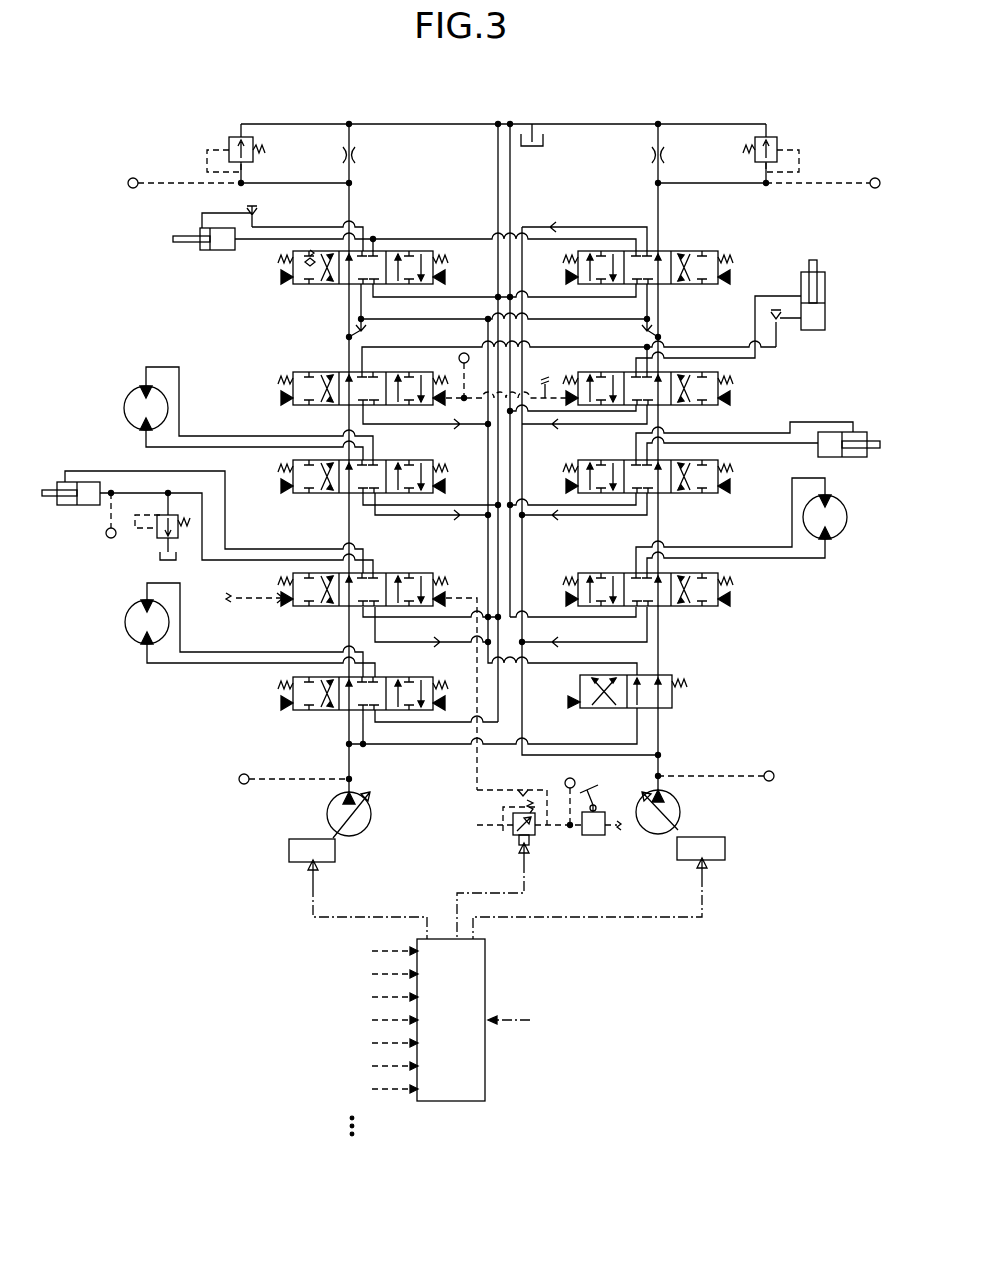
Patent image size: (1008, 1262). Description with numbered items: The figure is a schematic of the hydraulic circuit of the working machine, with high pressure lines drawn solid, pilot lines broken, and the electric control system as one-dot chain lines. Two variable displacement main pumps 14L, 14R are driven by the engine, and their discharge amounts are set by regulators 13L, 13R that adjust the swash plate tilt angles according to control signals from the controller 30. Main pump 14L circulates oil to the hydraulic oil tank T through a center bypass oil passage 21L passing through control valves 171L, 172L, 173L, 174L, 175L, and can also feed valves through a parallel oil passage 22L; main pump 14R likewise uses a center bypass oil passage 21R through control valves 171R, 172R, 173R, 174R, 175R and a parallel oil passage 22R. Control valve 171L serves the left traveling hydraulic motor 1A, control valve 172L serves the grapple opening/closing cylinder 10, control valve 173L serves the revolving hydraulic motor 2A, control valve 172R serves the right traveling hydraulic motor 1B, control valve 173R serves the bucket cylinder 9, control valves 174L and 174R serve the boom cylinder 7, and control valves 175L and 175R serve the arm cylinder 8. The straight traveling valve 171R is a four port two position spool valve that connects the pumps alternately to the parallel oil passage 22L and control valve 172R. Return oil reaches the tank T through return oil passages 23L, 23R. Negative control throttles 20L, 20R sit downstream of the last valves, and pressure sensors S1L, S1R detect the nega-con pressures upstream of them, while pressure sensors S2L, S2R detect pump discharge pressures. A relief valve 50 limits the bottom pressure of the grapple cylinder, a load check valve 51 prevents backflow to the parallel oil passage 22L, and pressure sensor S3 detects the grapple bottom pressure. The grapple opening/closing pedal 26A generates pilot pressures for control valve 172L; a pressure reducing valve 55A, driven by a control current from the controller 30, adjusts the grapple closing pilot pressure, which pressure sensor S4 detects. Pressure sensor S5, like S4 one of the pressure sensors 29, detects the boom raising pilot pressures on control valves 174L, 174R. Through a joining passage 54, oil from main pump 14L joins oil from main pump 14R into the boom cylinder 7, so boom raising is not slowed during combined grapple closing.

The pressure sensor S1L is at (133, 178).
The pressure sensor S1R is at (875, 178).
The negative control throttle 20L is at (343, 158).
The negative control throttle 20R is at (666, 157).
The hydraulic oil tank T is at (535, 147).
The return oil passage 23L is at (495, 200).
The return oil passage 23R is at (515, 200).
The arm cylinder 8 is at (186, 226).
The control valve 175L is at (283, 262).
The control valve 175R is at (722, 268).
The boom cylinder 7 is at (813, 260).
The control valve 174L is at (290, 378).
The control valve 174R is at (722, 385).
The joining passage 54 is at (418, 346).
The pressure sensor S5 is at (459, 360).
The revolving hydraulic motor 2A is at (125, 395).
The bucket cylinder 9 is at (872, 432).
The control valve 173L is at (283, 470).
The control valve 173R is at (722, 475).
The right traveling hydraulic motor 1B is at (840, 500).
The grapple opening/closing cylinder 10 is at (72, 506).
The pressure sensor S3 is at (107, 540).
The relief valve 50 is at (157, 535).
The parallel oil passage 22L is at (485, 535).
The parallel oil passage 22R is at (525, 535).
The control valve 172L is at (283, 580).
The control valve 172R is at (722, 586).
The grapple opening/closing pedal 26A is at (592, 872).
The left traveling hydraulic motor 1A is at (125, 605).
The load check valve 51 is at (441, 646).
The control valve 171L is at (283, 687).
The straight traveling valve 171R is at (657, 674).
The center bypass oil passage 21L is at (345, 770).
The center bypass oil passage 21R is at (665, 745).
The pressure sensor S2L is at (239, 779).
The pressure sensor S2R is at (775, 776).
The main pump 14L is at (331, 800).
The main pump 14R is at (686, 800).
The regulator 13L is at (289, 846).
The regulator 13R is at (725, 846).
The pressure sensor S4 is at (565, 780).
The pressure reducing valve 55A is at (512, 834).
The controller 30 is at (485, 981).
The pressure sensors 29 is at (526, 1021).